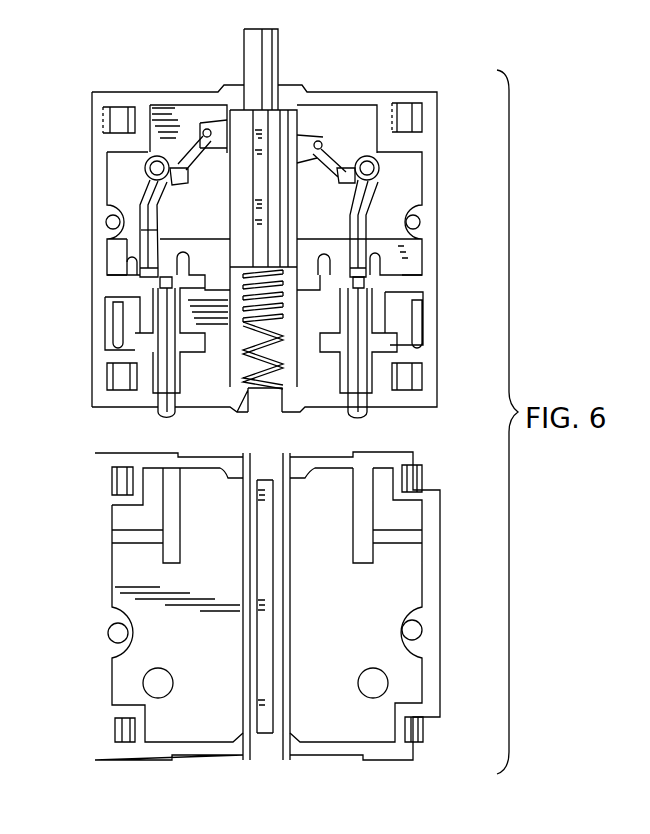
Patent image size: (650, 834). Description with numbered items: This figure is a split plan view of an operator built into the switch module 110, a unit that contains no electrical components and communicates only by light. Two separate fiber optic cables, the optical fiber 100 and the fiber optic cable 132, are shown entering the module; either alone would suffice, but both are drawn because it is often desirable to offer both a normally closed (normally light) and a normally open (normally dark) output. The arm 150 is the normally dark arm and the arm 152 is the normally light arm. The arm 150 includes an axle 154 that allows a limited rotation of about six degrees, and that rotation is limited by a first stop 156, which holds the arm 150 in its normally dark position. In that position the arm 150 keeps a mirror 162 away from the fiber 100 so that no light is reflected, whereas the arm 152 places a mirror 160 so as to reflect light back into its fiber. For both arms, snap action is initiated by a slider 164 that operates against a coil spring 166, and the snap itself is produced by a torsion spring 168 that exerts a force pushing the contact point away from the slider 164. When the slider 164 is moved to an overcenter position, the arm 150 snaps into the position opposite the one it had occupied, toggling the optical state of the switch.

The optical fiber 100 is at (158, 413).
The switch module 110 is at (92, 355).
The fiber optic cable 132 is at (368, 412).
The arm 150 is at (160, 235).
The arm 152 is at (355, 212).
The axle 154 is at (145, 168).
The first stop 156 is at (108, 265).
The mirror 160 is at (358, 270).
The mirror 162 is at (137, 283).
The slider 164 is at (303, 137).
The coil spring 166 is at (249, 389).
The torsion spring 168 is at (199, 172).